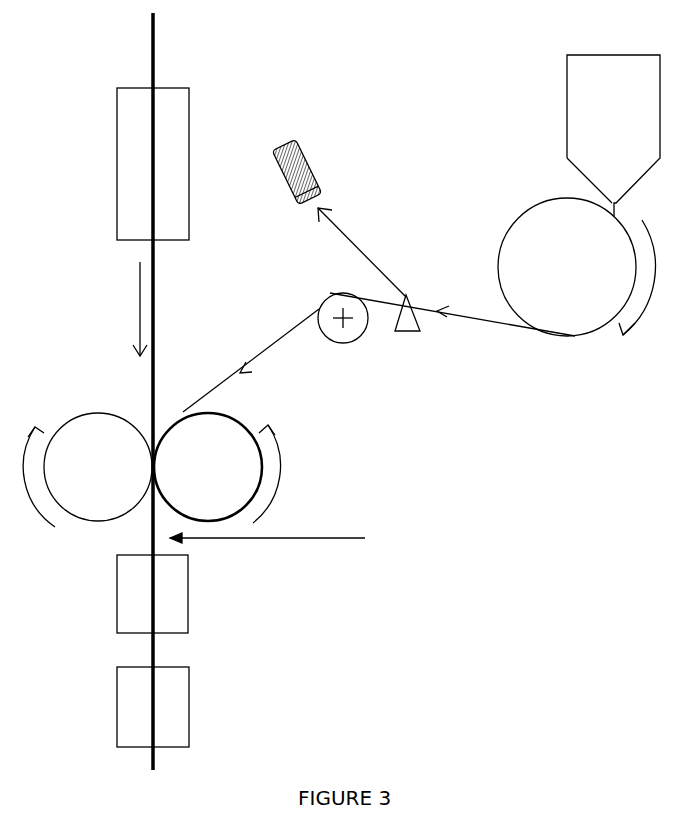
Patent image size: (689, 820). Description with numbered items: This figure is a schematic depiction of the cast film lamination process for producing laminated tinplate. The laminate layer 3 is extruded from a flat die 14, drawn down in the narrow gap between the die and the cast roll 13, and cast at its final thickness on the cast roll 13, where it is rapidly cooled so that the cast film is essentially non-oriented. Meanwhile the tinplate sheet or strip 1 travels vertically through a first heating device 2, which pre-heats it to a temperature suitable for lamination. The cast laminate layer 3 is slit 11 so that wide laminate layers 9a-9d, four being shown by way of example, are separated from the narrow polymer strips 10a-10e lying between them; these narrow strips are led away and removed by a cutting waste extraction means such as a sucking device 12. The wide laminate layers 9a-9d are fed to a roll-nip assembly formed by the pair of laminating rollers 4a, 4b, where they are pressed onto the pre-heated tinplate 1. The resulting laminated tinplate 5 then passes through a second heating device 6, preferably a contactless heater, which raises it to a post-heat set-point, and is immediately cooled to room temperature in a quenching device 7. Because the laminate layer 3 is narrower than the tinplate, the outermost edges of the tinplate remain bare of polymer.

The tinplate sheet or strip 1 is at (158, 391).
The first heating device 2 is at (166, 162).
The laminate layer 3 is at (510, 345).
The laminating roller 4a is at (87, 470).
The laminating roller 4b is at (217, 468).
The laminated tinplate 5 is at (286, 538).
The second heating device 6 is at (168, 594).
The quenching device 7 is at (168, 707).
The wide laminate layers 9a-9d is at (251, 353).
The narrow polymer strips 10a-10e is at (393, 252).
The slitting 11 is at (407, 345).
The sucking device 12 is at (313, 165).
The cast roll 13 is at (576, 267).
The flat die 14 is at (613, 135).